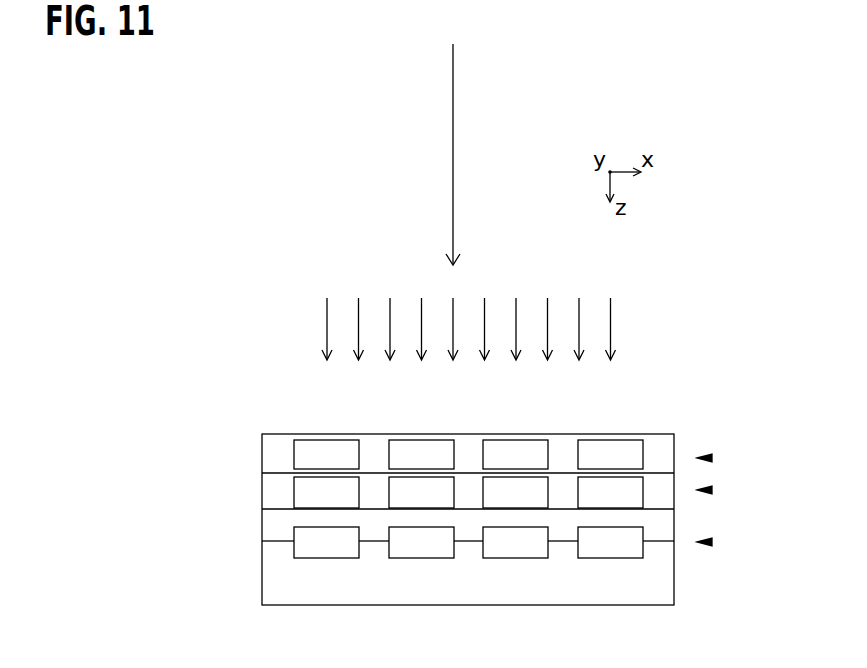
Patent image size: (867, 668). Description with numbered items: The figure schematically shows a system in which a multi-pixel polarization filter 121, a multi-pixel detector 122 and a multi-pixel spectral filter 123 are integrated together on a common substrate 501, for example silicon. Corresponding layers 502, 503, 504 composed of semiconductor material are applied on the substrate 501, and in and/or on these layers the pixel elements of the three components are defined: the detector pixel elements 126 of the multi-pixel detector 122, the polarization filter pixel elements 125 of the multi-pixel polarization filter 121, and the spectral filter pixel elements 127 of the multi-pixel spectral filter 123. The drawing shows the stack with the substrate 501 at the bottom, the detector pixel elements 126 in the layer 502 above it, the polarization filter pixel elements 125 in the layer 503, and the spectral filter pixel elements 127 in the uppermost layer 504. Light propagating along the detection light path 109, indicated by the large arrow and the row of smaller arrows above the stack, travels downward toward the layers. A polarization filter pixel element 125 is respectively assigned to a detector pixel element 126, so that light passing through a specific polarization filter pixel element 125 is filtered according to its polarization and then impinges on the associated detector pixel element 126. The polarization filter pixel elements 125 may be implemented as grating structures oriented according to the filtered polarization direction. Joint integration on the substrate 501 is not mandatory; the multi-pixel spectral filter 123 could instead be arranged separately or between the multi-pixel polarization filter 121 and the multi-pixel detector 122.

The detection light path 109 is at (453, 143).
The multi-pixel polarization filter 121 is at (712, 490).
The multi-pixel detector 122 is at (712, 542).
The multi-pixel spectral filter 123 is at (712, 458).
The polarization filter pixel element 125 is at (346, 505).
The detector pixel element 126 is at (346, 554).
The spectral filter pixel element 127 is at (346, 467).
The common substrate 501 is at (270, 568).
The layer 502 is at (270, 528).
The layer 503 is at (270, 486).
The layer 504 is at (270, 450).